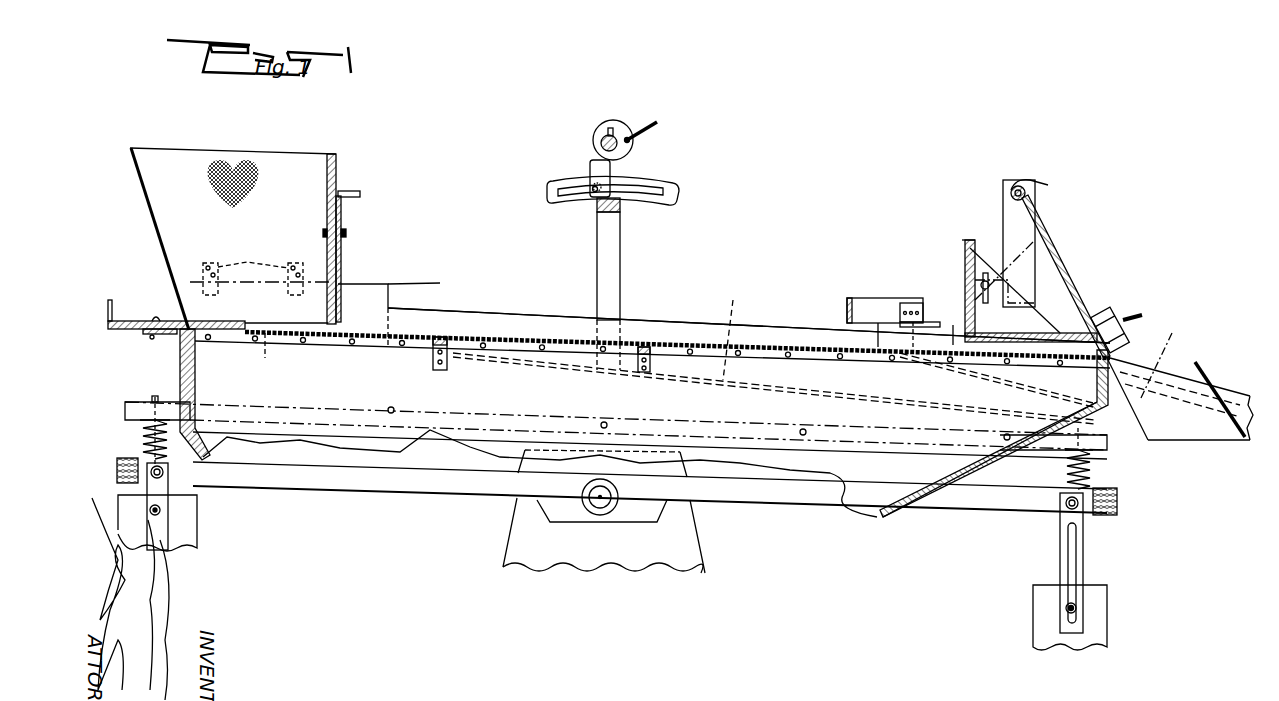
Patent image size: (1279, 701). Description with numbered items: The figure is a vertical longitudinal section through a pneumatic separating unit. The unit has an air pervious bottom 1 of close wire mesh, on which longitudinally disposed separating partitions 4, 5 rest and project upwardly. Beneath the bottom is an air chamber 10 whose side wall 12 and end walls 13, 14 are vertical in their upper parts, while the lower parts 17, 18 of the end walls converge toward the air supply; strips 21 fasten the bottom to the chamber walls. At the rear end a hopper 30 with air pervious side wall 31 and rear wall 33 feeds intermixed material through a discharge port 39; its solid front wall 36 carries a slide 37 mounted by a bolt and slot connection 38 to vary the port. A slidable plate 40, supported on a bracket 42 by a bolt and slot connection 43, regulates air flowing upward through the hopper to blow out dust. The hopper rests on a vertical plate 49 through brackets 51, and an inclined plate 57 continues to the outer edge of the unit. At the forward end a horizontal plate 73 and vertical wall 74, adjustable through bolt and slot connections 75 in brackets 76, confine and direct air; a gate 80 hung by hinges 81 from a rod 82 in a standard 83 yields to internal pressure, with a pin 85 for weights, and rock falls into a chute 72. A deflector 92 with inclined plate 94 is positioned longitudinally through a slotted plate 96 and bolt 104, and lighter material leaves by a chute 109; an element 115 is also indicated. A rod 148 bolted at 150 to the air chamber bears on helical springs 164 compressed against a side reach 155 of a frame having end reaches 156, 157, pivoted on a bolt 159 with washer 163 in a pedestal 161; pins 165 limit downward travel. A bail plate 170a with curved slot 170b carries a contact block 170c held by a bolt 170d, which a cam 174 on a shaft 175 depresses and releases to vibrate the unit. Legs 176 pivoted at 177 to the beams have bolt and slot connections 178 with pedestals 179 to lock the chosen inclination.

The air pervious bottom 1 is at (700, 332).
The separating partition 4 is at (550, 322).
The separating partition 5 is at (893, 355).
The air chamber 10 is at (492, 395).
The side wall of air chamber 12 is at (362, 388).
The end wall of air chamber 13 is at (180, 383).
The end wall of air chamber 14 is at (1097, 385).
The lower part of end wall 17 is at (167, 447).
The lower part of end wall 18 is at (933, 503).
The strips 21 is at (770, 355).
The hopper 30 is at (290, 164).
The hopper side wall 31 is at (225, 172).
The hopper rear wall 33 is at (150, 222).
The front wall of hopper 36 is at (338, 170).
The slide 37 is at (345, 222).
The bolt and slot connection 38 is at (348, 236).
The discharge port 39 is at (338, 328).
The slidable plate 40 is at (150, 318).
The bracket 42 is at (177, 333).
The bolt and slot connection 43 is at (150, 338).
The vertically disposed plate 49 is at (253, 340).
The brackets 51 is at (247, 264).
The inclined plate 57 is at (400, 296).
The chute 72 is at (1198, 372).
The horizontally-disposed plate 73 is at (1020, 333).
The vertically-disposed wall 74 is at (968, 262).
The bolt and slot connections 75 is at (988, 275).
The brackets 76 is at (1018, 287).
The gate 80 is at (1073, 277).
The hinges 81 is at (1036, 196).
The rod 82 is at (1020, 186).
The standard 83 is at (1040, 185).
The pin 85 is at (1125, 315).
The deflector 92 is at (847, 312).
The deflector plate 94 is at (868, 298).
The forwardly-projecting plate 96 is at (937, 322).
The bolt 104 is at (913, 303).
The chute 109 is at (738, 302).
The pivot axis line 115 is at (1176, 360).
The rod 148 is at (545, 412).
The bolt 150 is at (391, 407).
The side reach 155 is at (733, 497).
The end reach 156 is at (115, 470).
The end reach 157 is at (1117, 500).
The bolt 159 is at (602, 500).
The pedestal 161 is at (680, 555).
The washer 163 is at (597, 500).
The helical springs 164 is at (168, 470).
The pins 165 is at (147, 443).
The plate 170a is at (637, 205).
The curved slot 170b is at (640, 185).
The contact block 170c is at (593, 170).
The bolt 170d is at (587, 197).
The cam 174 is at (663, 126).
The shaft 175 is at (602, 130).
The legs 176 is at (150, 488).
The pivotal connection 177 is at (170, 490).
The bolt and slot connection 178 is at (150, 510).
The pedestal 179 is at (190, 535).